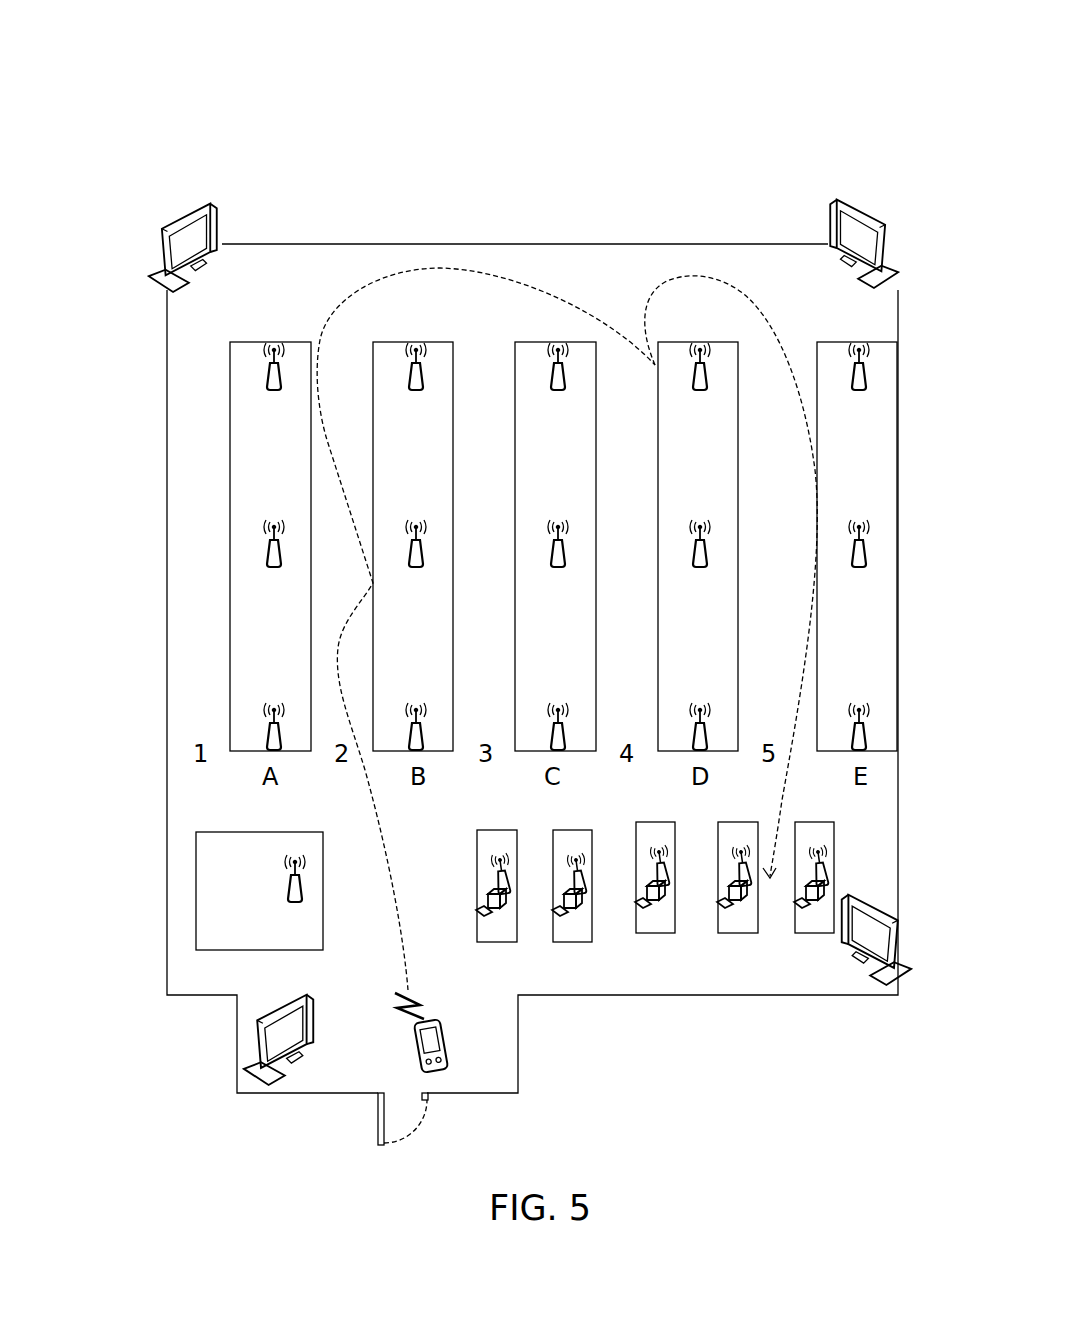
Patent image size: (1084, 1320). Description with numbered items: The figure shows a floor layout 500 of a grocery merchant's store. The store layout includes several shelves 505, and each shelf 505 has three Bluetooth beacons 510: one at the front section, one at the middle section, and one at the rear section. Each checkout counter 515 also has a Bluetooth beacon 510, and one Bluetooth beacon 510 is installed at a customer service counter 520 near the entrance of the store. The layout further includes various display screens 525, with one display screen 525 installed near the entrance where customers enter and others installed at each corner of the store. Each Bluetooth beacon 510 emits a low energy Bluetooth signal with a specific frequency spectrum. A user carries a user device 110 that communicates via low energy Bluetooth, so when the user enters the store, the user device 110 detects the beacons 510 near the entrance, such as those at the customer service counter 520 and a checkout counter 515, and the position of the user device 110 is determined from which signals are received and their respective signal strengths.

The facility / system environment 500 is at (224, 82).
The shelf 505 is at (230, 341).
The Bluetooth beacon 510 is at (282, 366).
The checkout counter 515 is at (477, 857).
The customer service counter 520 is at (323, 852).
The display screen 525 is at (220, 228).
The user device 110 is at (446, 1058).